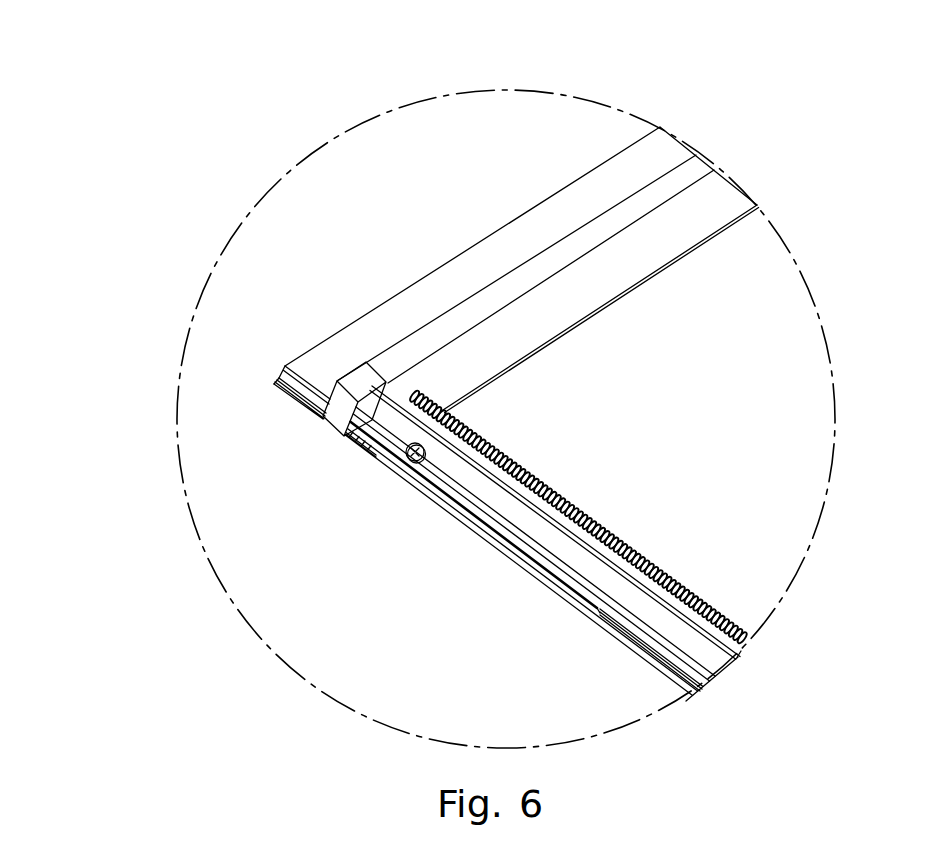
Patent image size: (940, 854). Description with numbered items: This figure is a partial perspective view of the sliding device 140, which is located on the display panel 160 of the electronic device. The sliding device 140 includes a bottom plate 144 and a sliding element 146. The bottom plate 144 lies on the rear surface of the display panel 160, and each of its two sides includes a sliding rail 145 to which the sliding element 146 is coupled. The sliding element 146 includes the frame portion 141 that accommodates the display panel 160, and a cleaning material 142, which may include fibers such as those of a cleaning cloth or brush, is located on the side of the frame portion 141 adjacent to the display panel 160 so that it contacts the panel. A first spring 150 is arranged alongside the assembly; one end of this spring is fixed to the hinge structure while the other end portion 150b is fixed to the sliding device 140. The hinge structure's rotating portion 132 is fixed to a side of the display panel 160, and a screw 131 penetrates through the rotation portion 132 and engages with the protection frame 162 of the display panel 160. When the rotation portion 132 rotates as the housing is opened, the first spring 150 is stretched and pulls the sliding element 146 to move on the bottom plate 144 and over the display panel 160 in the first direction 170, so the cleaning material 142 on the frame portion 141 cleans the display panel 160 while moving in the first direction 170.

The screw 131 is at (413, 463).
The rotating portion 132 is at (540, 532).
The sliding device 140 is at (508, 224).
The frame portion 141 is at (507, 287).
The cleaning material 142 is at (720, 197).
The bottom plate 144 is at (374, 327).
The sliding rail 145 is at (303, 402).
The sliding element 146 is at (370, 460).
The first spring 150 is at (640, 557).
The end portion of the first spring 150b is at (366, 371).
The display panel 160 is at (815, 402).
The protection frame 162 is at (742, 654).
The first direction 170 is at (614, 380).